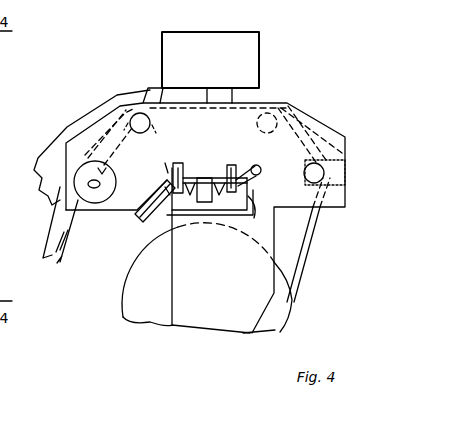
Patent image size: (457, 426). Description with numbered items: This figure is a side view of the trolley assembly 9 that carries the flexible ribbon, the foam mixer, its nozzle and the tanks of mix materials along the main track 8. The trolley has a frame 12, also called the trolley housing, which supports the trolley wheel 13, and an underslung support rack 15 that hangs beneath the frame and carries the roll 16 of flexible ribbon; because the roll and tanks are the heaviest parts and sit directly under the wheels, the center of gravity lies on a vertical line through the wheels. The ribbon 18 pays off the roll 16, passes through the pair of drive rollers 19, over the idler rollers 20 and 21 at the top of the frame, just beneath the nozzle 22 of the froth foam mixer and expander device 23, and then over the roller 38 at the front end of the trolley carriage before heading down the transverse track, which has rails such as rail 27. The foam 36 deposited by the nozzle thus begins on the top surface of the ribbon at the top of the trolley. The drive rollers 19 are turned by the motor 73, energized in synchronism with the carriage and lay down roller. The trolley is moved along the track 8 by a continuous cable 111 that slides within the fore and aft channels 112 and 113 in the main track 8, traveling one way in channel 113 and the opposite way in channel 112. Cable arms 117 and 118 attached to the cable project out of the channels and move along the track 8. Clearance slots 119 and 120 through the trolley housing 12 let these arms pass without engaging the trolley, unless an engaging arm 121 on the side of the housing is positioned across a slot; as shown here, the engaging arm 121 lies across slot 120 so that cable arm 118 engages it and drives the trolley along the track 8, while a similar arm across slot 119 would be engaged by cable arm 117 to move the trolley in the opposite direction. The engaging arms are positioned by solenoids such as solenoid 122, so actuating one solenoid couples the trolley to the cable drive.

The main track 8 is at (187, 212).
The trolley assembly 9 is at (283, 62).
The frame 12 is at (282, 104).
The trolley wheel 13 is at (204, 178).
The underslung support rack 15 is at (218, 316).
The roll of flexible ribbon 16 is at (273, 318).
The ribbon 18 is at (57, 212).
The drive rollers 19 is at (350, 156).
The idler roller 20 is at (258, 128).
The idler roller 21 is at (160, 122).
The nozzle 22 is at (153, 88).
The froth foam mixer and expander device 23 is at (259, 33).
The rail 27 is at (65, 258).
The foam 36 is at (78, 120).
The roller 38 is at (104, 160).
The motor 73 is at (328, 180).
The continuous cable 111 is at (232, 216).
The channel 112 is at (249, 186).
The channel 113 is at (138, 217).
The cable arm 117 is at (165, 190).
The cable arm 118 is at (250, 170).
The clearance slot 119 is at (166, 166).
The clearance slot 120 is at (226, 165).
The engaging arm 121 is at (234, 165).
The solenoid 122 is at (262, 171).